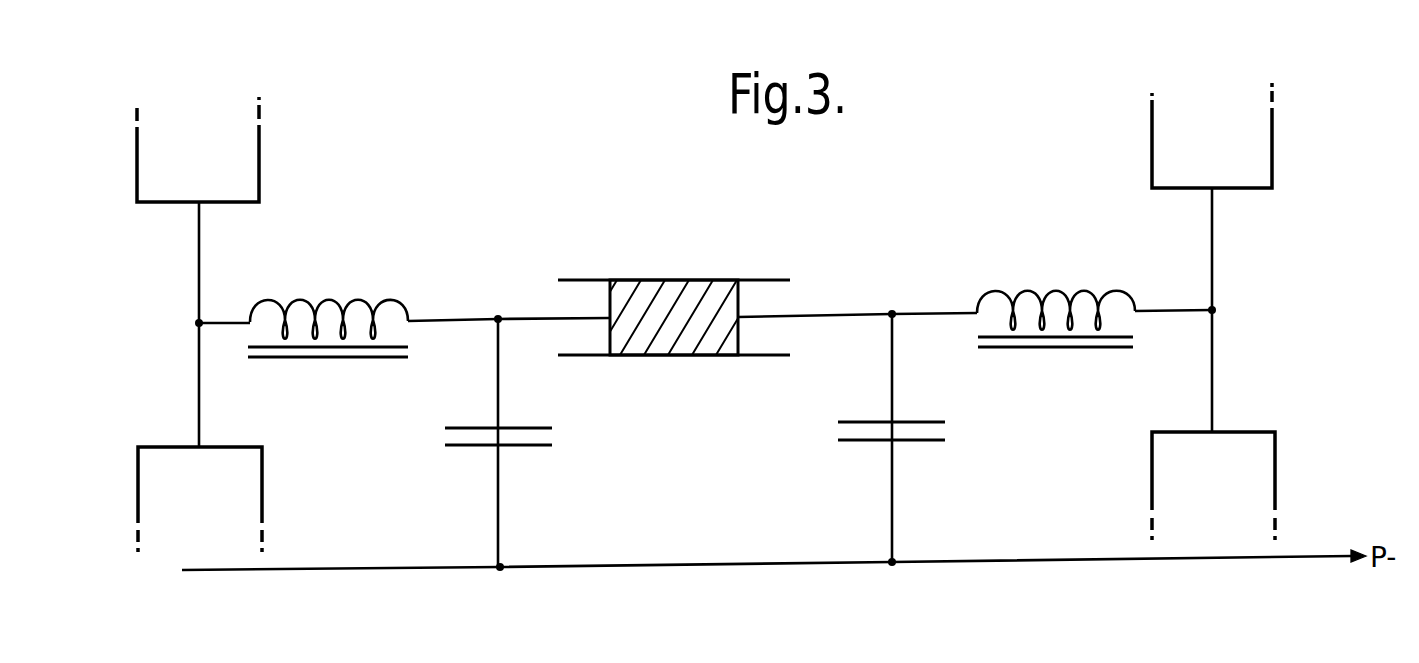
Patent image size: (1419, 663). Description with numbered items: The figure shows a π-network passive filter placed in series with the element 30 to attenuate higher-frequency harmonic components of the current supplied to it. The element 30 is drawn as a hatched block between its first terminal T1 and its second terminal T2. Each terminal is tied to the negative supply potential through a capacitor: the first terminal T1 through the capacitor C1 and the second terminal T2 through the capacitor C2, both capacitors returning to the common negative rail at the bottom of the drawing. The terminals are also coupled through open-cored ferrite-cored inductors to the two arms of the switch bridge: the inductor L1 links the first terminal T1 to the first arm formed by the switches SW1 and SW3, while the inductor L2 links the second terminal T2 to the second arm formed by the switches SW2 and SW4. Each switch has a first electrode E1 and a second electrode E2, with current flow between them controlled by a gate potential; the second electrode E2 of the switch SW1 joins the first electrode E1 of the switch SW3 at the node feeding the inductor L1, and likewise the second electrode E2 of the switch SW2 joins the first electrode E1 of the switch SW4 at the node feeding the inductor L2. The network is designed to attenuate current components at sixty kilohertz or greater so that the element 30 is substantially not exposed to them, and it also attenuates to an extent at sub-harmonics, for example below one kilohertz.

The element 30 is at (702, 258).
The inductor L1 is at (328, 308).
The inductor L2 is at (1056, 298).
The capacitor C1 is at (519, 443).
The capacitor C2 is at (912, 438).
The switch SW1 is at (198, 149).
The switch SW2 is at (1212, 135).
The switch SW3 is at (200, 499).
The switch SW4 is at (1213, 486).
The first terminal T1 is at (554, 298).
The second terminal T2 is at (815, 297).
The first electrode E1 is at (705, 378).
The second electrode E2 is at (705, 255).